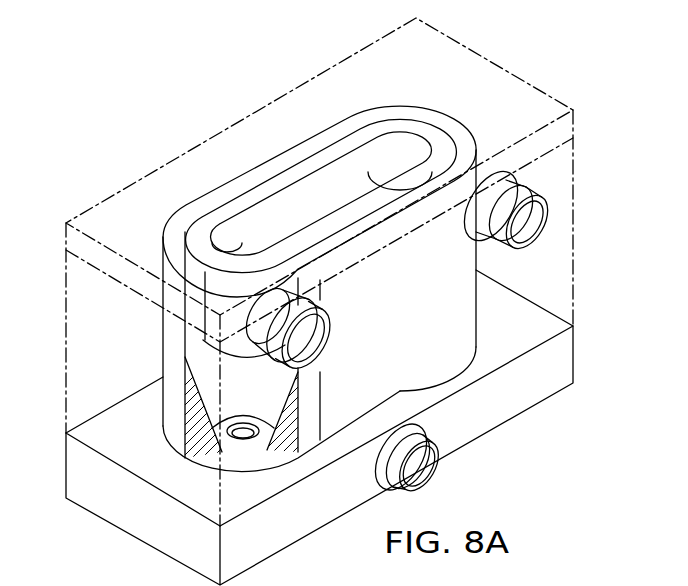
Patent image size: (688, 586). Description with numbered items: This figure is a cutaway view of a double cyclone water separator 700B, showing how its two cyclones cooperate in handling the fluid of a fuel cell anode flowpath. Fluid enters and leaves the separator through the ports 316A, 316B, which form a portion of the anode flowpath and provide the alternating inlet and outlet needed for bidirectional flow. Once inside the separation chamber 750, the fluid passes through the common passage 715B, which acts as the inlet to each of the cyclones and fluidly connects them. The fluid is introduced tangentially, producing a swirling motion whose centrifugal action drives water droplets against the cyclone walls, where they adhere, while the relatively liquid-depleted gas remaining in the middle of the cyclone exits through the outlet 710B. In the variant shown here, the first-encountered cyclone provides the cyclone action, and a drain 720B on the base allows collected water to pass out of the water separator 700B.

The double cyclone water separator 700B is at (190, 125).
The separation chamber 750 is at (64, 305).
The common passage 715B is at (300, 212).
The outlet 710B is at (212, 343).
The port 316A is at (549, 206).
The port 316B is at (333, 331).
The base port fitting 720B is at (418, 469).